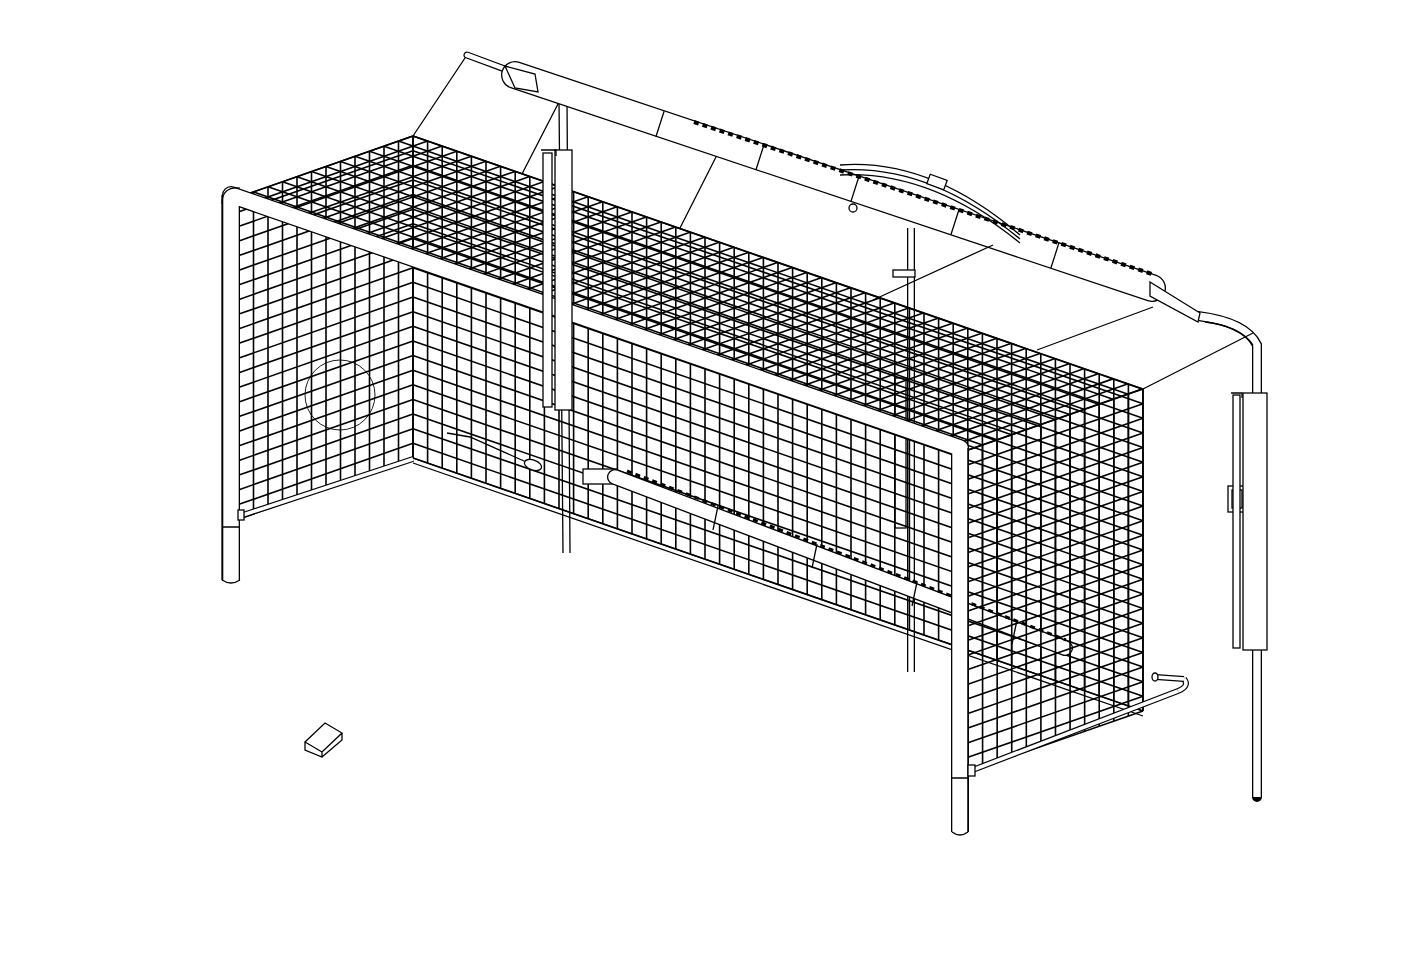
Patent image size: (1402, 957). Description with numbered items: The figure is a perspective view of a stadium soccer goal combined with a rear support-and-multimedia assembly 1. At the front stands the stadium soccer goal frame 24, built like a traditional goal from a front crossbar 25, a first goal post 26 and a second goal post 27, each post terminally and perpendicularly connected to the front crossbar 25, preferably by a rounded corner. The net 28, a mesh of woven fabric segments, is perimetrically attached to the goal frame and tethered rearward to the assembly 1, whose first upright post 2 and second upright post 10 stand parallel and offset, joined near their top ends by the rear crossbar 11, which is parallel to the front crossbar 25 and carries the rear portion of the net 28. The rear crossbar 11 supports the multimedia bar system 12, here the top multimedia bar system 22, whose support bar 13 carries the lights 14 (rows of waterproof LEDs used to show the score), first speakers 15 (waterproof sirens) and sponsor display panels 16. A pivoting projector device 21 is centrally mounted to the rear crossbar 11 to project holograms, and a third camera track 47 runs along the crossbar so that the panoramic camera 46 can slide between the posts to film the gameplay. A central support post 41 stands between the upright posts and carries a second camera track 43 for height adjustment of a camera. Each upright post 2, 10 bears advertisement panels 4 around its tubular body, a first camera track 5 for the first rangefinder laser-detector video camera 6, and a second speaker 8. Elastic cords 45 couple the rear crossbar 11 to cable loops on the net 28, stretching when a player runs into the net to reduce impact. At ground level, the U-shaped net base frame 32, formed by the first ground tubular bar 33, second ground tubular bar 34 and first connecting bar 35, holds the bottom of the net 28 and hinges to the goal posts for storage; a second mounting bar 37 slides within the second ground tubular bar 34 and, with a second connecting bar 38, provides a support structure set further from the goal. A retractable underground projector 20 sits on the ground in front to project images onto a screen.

The rear support-and-multimedia assembly 1 is at (1032, 118).
The first upright post 2 is at (540, 125).
The advertisement panels 4 is at (1263, 465).
The first camera track 5 is at (1233, 441).
The first rangefinder laser-detector video camera 6 is at (362, 375).
The second speaker 8 is at (575, 153).
The second upright post 10 is at (1314, 538).
The rear crossbar 11 is at (1216, 326).
The multimedia bar system 12 is at (790, 131).
The support bar 13 is at (1156, 674).
The lights 14 is at (722, 118).
The first speakers 15 is at (560, 80).
The sponsor display panels 16 is at (650, 110).
The retractable underground projector 20 is at (330, 728).
The pivoting projector device 21 is at (849, 211).
The top multimedia bar system 22 is at (779, 464).
The stadium soccer goal frame 24 is at (152, 237).
The front crossbar 25 is at (258, 190).
The first goal post 26 is at (222, 327).
The second goal post 27 is at (952, 766).
The net 28 is at (291, 164).
The net base frame 32 is at (1096, 757).
The first ground tubular bar 33 is at (345, 488).
The second ground tubular bar 34 is at (1045, 751).
The first connecting bar 35 is at (650, 543).
The second mounting bar 37 is at (1170, 707).
The second connecting bar 38 is at (1178, 680).
The central support post 41 is at (906, 234).
The second camera track 43 is at (893, 275).
The elastic cord 45 is at (936, 277).
The panoramic camera 46 is at (938, 178).
The third camera track 47 is at (992, 206).